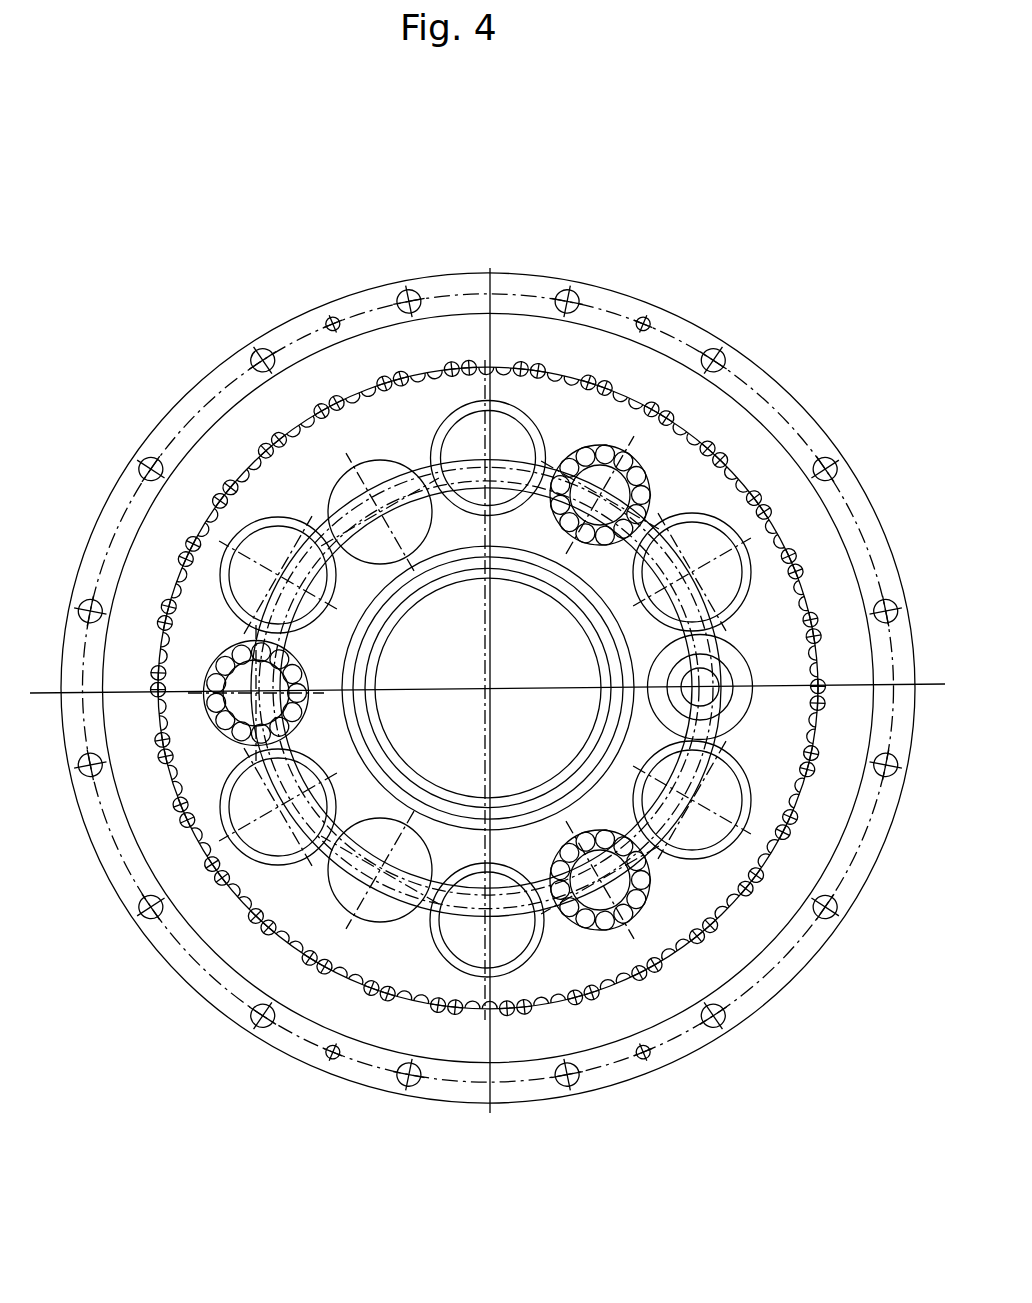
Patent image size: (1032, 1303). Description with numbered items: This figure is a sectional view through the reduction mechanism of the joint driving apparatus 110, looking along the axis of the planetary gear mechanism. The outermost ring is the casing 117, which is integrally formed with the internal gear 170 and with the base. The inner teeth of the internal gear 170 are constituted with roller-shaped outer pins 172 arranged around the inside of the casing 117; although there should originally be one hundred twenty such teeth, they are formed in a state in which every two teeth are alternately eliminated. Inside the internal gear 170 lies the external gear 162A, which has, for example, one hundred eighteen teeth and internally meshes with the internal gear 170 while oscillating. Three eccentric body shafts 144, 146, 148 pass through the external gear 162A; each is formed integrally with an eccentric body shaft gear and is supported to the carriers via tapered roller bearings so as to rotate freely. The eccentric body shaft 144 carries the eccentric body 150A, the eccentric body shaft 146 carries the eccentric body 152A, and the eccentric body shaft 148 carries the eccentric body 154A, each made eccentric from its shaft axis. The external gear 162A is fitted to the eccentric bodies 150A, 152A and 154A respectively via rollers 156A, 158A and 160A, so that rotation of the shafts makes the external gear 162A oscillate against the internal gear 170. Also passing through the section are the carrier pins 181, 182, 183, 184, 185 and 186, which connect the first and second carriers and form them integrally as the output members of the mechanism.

The joint driving apparatus 110 is at (632, 212).
The casing 117 is at (737, 937).
The eccentric body shaft 144 is at (658, 391).
The eccentric body shaft 146 is at (698, 962).
The eccentric body shaft 148 is at (345, 672).
The eccentric body 150A is at (600, 457).
The eccentric body 152A is at (648, 885).
The eccentric body 154A is at (265, 682).
The roller 156A is at (662, 423).
The roller 158A is at (666, 949).
The roller 160A is at (327, 690).
The external gear 162A is at (390, 950).
The internal gear 170 is at (488, 687).
The outer pin 172 is at (517, 933).
The carrier pin 181 is at (507, 437).
The carrier pin 182 is at (697, 547).
The carrier pin 183 is at (838, 912).
The carrier pin 184 is at (547, 933).
The carrier pin 185 is at (275, 828).
The carrier pin 186 is at (272, 557).